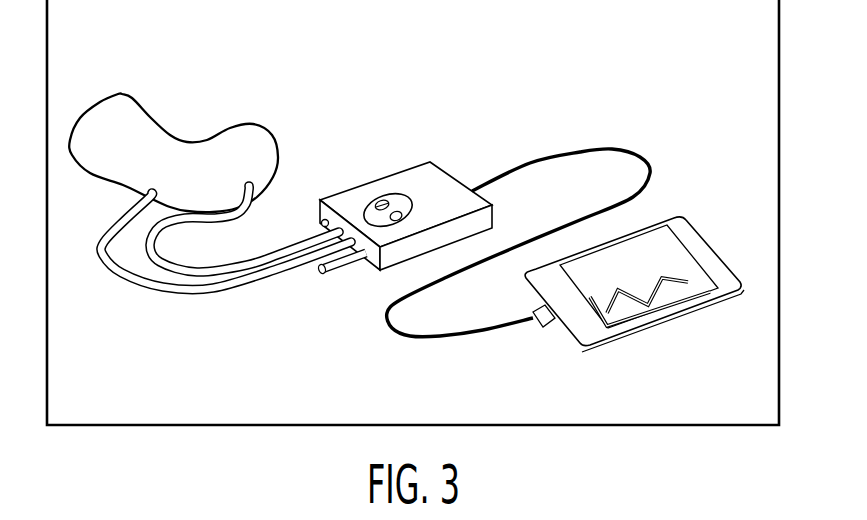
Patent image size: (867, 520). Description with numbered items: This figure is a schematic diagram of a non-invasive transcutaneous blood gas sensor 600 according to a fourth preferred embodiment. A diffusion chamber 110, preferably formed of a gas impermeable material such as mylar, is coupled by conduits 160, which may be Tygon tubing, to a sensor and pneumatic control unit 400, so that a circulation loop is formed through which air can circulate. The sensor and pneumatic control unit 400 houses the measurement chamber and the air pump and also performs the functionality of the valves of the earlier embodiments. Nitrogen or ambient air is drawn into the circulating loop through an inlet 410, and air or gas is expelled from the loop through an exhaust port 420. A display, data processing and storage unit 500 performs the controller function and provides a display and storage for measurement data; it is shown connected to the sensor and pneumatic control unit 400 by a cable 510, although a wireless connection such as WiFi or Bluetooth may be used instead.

The diffusion chamber 110 is at (132, 98).
The conduits 160 is at (170, 228).
The sensor and pneumatic control unit 400 is at (438, 178).
The inlet 410 is at (335, 263).
The exhaust port 420 is at (307, 224).
The display, data processing and storage unit 500 is at (650, 328).
The cable 510 is at (648, 165).
The non-invasive transcutaneous blood gas sensor 600 is at (629, 46).